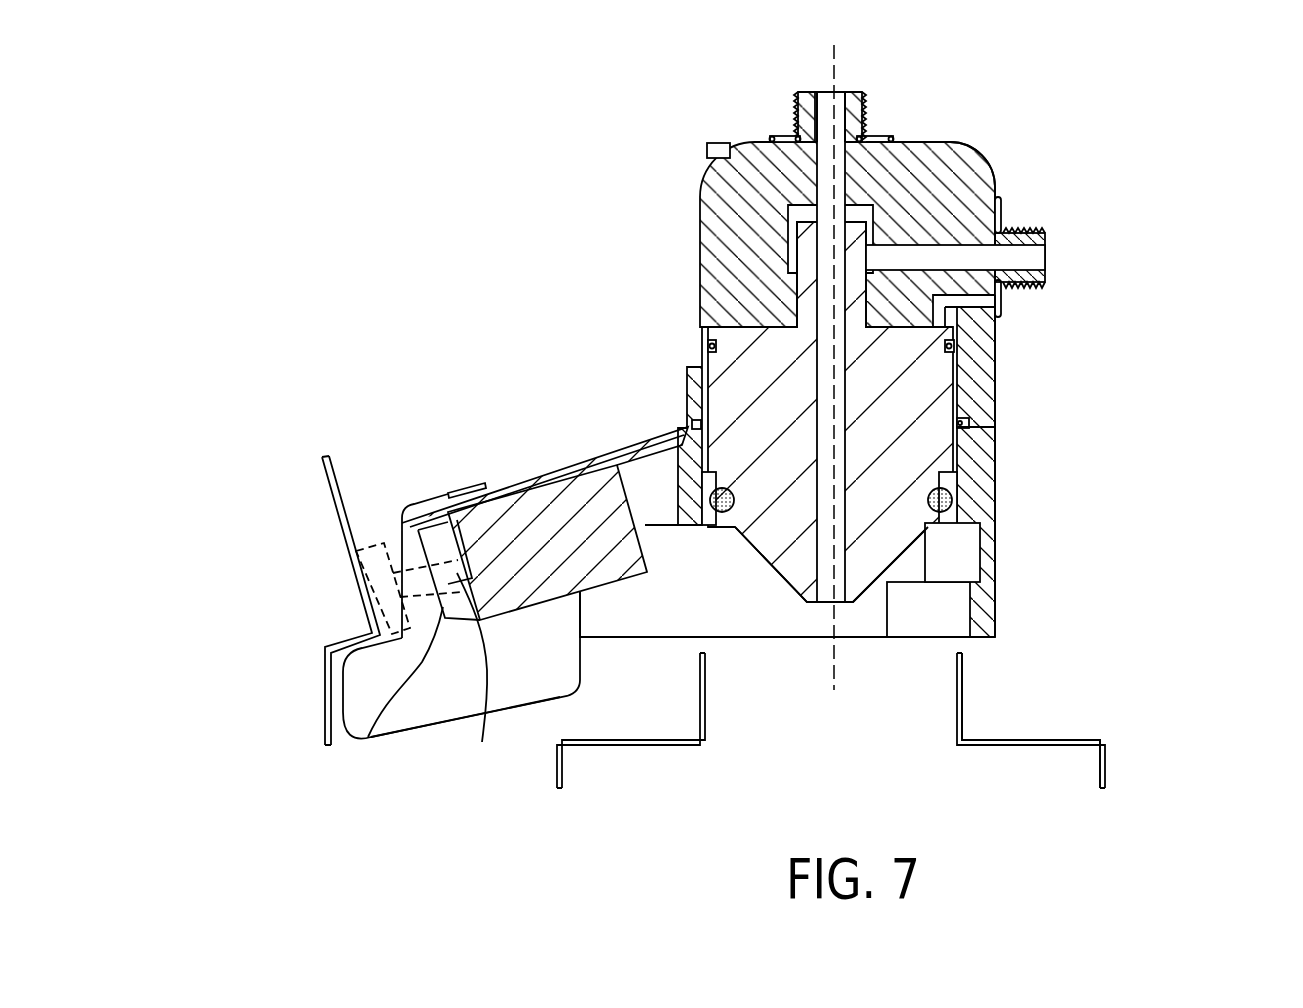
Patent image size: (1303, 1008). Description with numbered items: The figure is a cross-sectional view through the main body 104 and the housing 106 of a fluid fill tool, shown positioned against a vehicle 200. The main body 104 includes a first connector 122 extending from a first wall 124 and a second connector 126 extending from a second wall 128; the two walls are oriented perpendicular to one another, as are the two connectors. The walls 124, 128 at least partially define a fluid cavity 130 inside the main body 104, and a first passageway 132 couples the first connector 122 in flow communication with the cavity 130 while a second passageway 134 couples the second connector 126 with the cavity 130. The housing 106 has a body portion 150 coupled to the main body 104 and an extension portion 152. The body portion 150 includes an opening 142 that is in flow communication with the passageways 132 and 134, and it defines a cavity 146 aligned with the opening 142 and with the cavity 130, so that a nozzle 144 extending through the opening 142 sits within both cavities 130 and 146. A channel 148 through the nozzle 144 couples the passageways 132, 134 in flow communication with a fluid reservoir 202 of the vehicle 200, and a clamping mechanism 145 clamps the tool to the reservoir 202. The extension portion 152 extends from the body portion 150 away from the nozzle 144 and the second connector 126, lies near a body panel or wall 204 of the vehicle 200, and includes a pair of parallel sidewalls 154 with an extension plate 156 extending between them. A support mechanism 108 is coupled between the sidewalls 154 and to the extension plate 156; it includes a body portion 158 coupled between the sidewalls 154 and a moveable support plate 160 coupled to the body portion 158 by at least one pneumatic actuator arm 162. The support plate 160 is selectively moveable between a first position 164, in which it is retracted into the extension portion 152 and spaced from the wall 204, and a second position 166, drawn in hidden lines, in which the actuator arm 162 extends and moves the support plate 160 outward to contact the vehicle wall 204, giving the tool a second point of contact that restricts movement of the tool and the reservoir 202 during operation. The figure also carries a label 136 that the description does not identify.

The main body 104 is at (735, 212).
The housing 106 is at (1020, 645).
The support mechanism 108 is at (538, 628).
The first connector 122 is at (1020, 228).
The first wall 124 is at (972, 186).
The second connector 126 is at (862, 110).
The second wall 128 is at (905, 158).
The fluid cavity 130 is at (737, 322).
The first passageway 132 is at (967, 260).
The second passageway 134 is at (826, 143).
The central axis 136 is at (842, 55).
The opening 142 is at (968, 478).
The nozzle 144 is at (915, 380).
The clamping mechanism 145 is at (777, 588).
The cavity 146 is at (930, 552).
The channel 148 is at (824, 357).
The body portion 150 is at (988, 502).
The extension portion 152 is at (545, 475).
The parallel sidewalls 154 is at (423, 693).
The extension plate 156 is at (632, 445).
The body portion 158 is at (500, 515).
The moveable support plate 160 is at (368, 737).
The pneumatic actuator arm 162 is at (480, 670).
The first position 164 is at (431, 512).
The second position 166 is at (368, 532).
The vehicle 200 is at (292, 689).
The fluid reservoir 202 is at (1080, 737).
The body panel or wall 204 is at (324, 470).